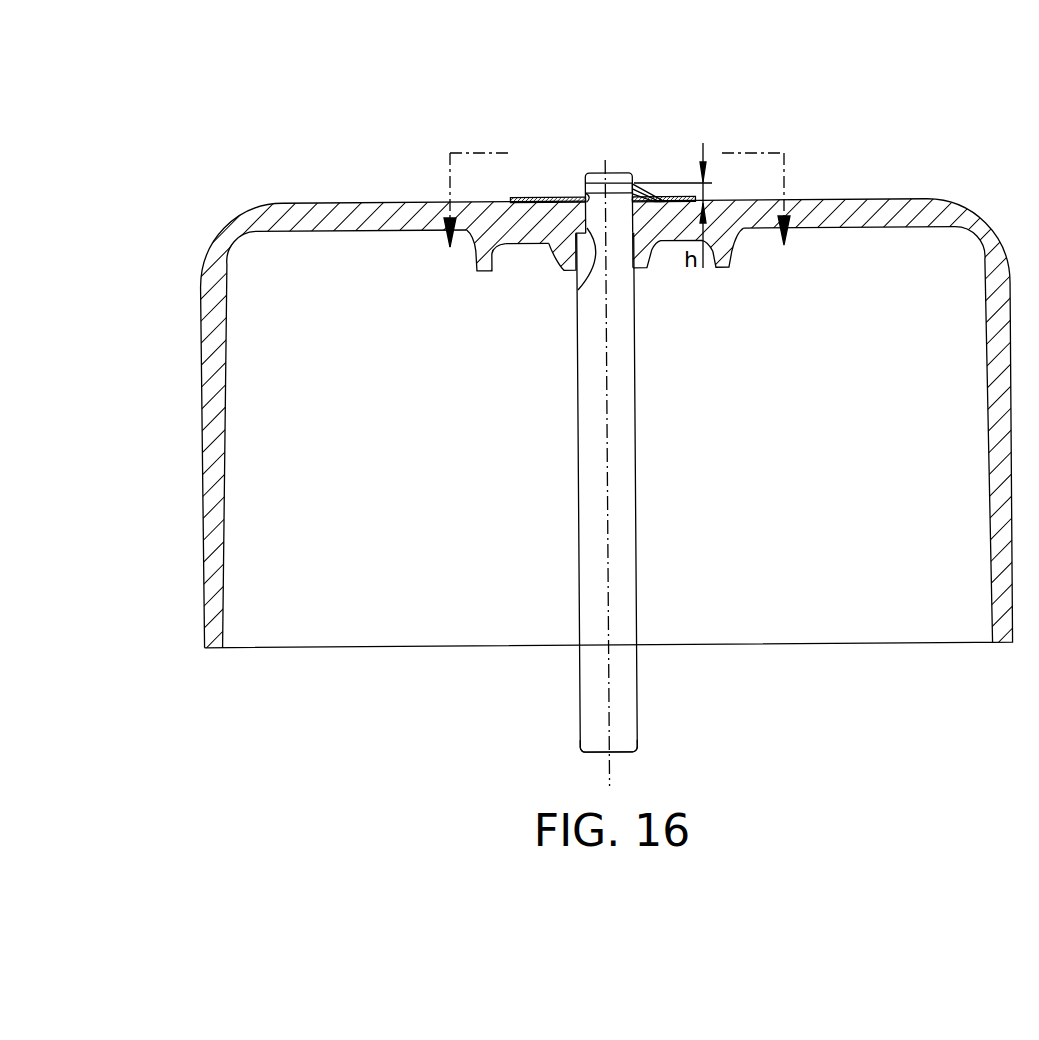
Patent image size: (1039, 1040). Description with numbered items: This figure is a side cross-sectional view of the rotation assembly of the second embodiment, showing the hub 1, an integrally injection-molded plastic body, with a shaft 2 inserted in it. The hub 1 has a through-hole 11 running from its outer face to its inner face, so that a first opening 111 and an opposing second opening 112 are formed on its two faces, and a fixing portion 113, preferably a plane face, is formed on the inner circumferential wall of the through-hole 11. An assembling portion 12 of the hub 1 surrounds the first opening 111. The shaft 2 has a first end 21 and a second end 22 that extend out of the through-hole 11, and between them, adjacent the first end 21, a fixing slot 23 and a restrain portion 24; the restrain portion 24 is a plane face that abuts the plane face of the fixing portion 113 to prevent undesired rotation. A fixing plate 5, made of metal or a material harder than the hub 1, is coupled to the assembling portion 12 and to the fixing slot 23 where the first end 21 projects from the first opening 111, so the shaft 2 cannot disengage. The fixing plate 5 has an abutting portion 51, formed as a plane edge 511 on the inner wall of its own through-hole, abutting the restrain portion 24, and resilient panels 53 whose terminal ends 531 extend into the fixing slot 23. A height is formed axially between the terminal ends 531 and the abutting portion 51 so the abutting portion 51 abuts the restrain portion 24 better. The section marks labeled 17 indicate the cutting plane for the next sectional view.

The hub 1 is at (347, 212).
The through-hole 11 is at (633, 228).
The first opening 111 is at (638, 184).
The second opening 112 is at (637, 280).
The fixing portion 113 is at (578, 292).
The assembling portion 12 is at (511, 195).
The shaft 2 is at (632, 543).
The first end 21 is at (592, 168).
The second end 22 is at (641, 755).
The fixing slot 23 is at (613, 187).
The restrain portion 24 is at (553, 241).
The fixing plate 5 is at (578, 197).
The abutting portion 51 is at (582, 193).
The plane edge 511 is at (584, 181).
The resilient panel 53 is at (648, 197).
The terminal end 531 is at (634, 181).
The section line 17 is at (622, 230).